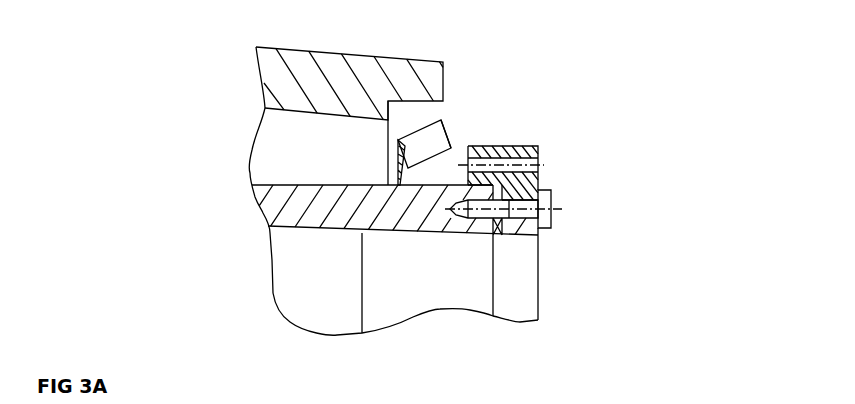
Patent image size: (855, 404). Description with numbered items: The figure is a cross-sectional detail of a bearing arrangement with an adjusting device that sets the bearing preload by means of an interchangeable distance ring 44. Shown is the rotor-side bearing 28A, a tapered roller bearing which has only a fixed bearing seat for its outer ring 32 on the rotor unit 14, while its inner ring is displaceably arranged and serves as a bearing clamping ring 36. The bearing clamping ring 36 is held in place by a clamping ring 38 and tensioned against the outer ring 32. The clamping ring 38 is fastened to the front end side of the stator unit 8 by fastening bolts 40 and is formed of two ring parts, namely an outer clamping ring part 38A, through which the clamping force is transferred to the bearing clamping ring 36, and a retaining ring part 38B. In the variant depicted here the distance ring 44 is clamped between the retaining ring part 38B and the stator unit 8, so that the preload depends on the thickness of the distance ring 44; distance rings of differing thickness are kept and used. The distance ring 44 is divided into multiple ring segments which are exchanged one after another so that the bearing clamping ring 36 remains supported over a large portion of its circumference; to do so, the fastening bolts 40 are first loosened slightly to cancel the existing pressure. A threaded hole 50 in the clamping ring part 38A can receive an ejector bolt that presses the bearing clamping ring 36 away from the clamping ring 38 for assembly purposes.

The stator unit 8 is at (270, 207).
The rotor unit 14 is at (280, 75).
The rotor-side bearing 28A is at (379, 136).
The outer ring 32 is at (412, 110).
The bearing clamping ring 36 is at (455, 148).
The clamping ring 38 is at (540, 181).
The clamping ring part 38A is at (510, 146).
The retaining ring part 38B is at (495, 235).
The fastening bolts 40 is at (555, 210).
The distance ring 44 is at (500, 240).
The threaded hole 50 is at (541, 166).